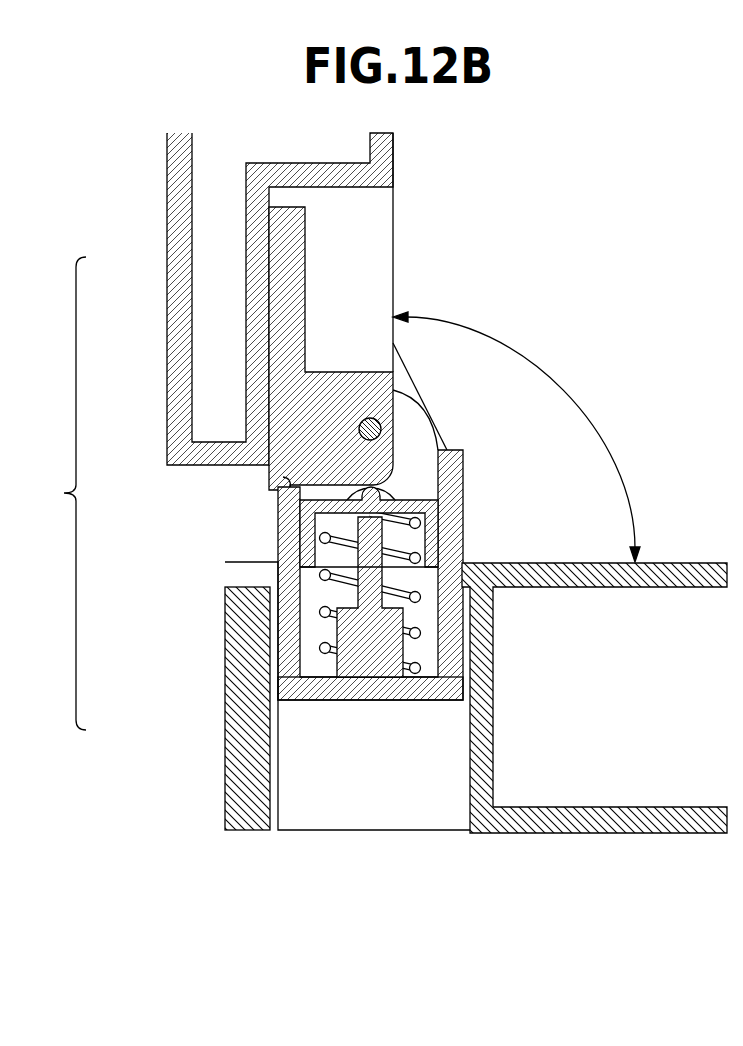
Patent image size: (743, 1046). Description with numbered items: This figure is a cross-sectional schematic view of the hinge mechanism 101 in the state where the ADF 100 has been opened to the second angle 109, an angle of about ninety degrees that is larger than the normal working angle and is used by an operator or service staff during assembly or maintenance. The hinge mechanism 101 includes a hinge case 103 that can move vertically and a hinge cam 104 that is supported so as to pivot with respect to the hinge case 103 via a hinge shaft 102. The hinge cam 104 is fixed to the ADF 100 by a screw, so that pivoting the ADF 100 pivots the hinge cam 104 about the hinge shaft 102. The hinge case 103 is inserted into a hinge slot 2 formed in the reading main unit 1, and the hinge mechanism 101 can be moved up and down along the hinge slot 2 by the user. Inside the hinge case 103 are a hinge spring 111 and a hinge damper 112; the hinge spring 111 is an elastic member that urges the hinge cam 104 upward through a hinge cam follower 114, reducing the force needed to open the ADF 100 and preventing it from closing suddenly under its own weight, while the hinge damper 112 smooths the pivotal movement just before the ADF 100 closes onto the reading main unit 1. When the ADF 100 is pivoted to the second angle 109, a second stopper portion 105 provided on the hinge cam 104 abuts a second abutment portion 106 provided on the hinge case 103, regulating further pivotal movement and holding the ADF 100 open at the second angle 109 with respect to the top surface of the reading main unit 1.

The reading main unit 1 is at (547, 827).
The hinge slot 2 is at (362, 831).
The ADF 100 is at (180, 236).
The hinge mechanism 101 is at (50, 493).
The hinge shaft 102 is at (381, 426).
The hinge case 103 is at (287, 670).
The hinge cam 104 is at (282, 428).
The second stopper portion 105 is at (282, 483).
The second abutment portion 106 is at (277, 515).
The second angle 109 is at (557, 390).
The hinge spring 111 is at (337, 588).
The hinge damper 112 is at (357, 637).
The hinge cam follower 114 is at (305, 530).